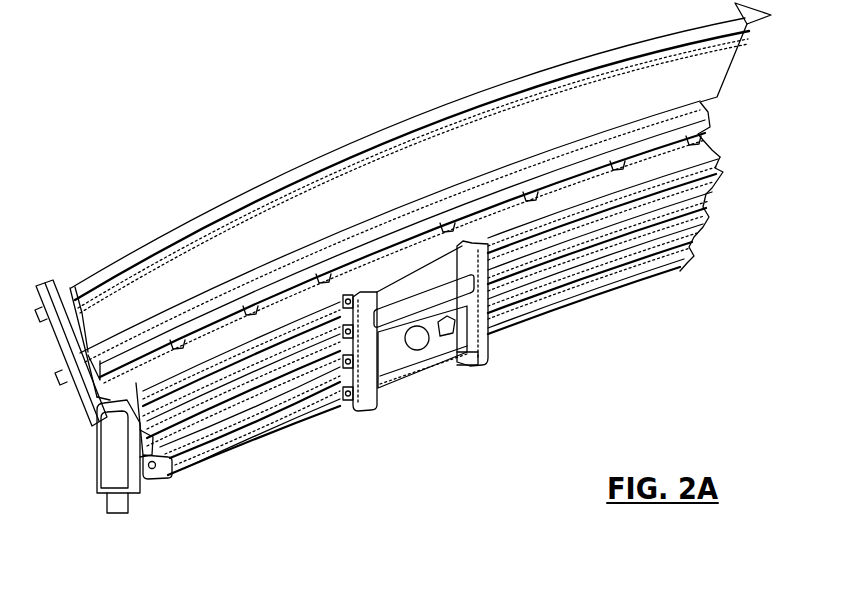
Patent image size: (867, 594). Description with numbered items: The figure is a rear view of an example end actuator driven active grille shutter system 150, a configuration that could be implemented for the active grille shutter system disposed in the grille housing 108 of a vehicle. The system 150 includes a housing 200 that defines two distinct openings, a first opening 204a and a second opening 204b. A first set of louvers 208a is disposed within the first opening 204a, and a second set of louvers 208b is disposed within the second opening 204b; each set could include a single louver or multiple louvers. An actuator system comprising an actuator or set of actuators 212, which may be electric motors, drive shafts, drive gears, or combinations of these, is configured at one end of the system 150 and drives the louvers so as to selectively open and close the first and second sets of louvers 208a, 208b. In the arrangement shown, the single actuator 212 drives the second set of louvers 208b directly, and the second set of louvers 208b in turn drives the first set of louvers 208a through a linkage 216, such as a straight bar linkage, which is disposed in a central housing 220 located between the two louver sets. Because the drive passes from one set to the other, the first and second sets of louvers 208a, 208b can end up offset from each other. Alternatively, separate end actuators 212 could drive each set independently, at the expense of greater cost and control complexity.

The end actuator driven AGS system 150 is at (156, 106).
The housing 108 is at (180, 232).
The housing 200 is at (713, 157).
The first opening 204a is at (622, 288).
The first set of louvers 208a is at (575, 298).
The second opening 204b is at (291, 427).
The second set of louvers 208b is at (234, 430).
The linkage 216 is at (397, 348).
The central housing 220 is at (487, 352).
The actuator 212 is at (97, 473).